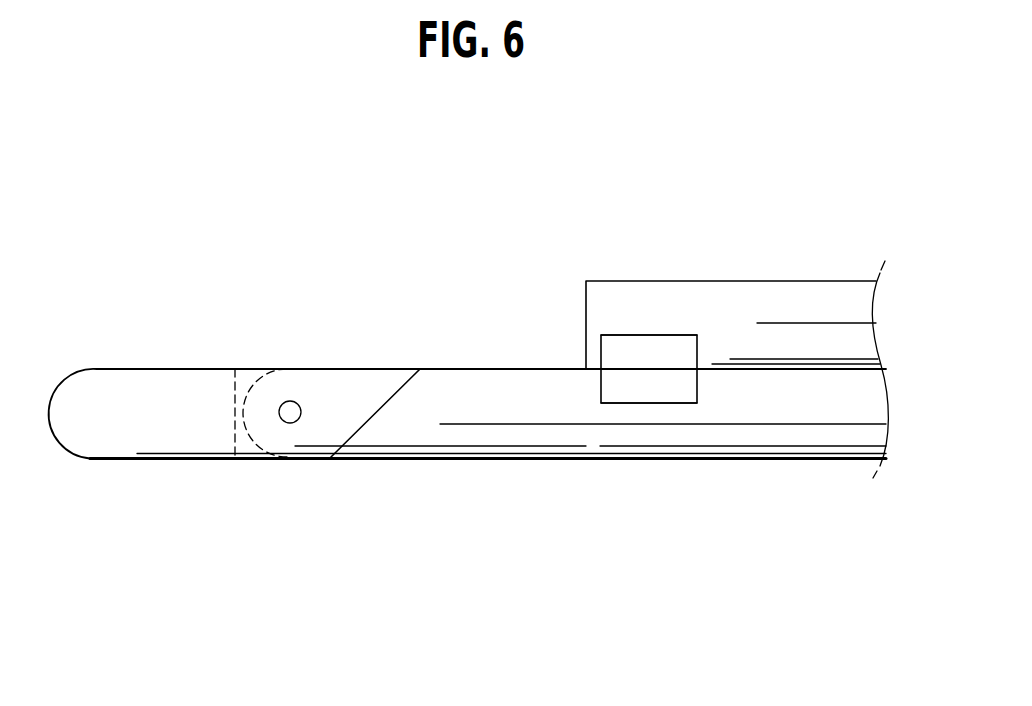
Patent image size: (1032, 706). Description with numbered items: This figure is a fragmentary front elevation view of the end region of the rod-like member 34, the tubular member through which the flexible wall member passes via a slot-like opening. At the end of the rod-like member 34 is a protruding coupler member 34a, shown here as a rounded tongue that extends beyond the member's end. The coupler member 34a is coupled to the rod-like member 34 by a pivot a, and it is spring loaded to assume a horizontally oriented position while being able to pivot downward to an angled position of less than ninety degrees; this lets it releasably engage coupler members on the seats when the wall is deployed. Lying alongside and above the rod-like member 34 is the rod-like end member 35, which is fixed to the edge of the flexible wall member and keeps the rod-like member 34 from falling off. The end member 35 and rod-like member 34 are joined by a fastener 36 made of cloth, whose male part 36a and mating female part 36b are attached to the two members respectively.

The rod-like member 34 is at (457, 390).
The protruding coupler member 34a is at (140, 390).
The pivot a is at (291, 401).
The rod-like end member 35 is at (803, 300).
The fastener 36 is at (622, 334).
The male part 36a is at (650, 350).
The female part 36b is at (650, 387).